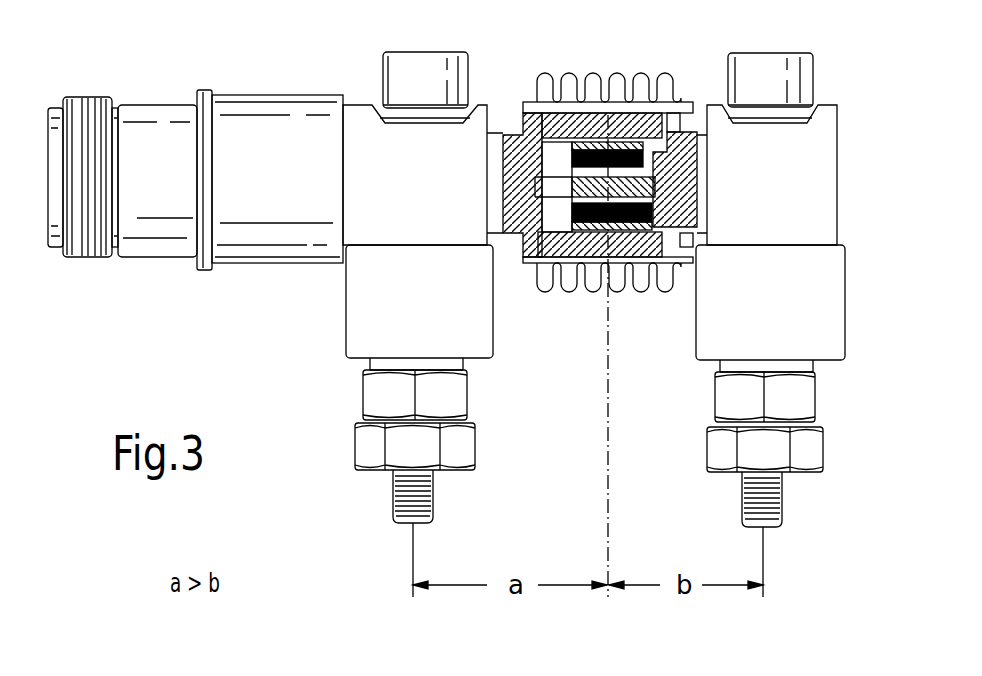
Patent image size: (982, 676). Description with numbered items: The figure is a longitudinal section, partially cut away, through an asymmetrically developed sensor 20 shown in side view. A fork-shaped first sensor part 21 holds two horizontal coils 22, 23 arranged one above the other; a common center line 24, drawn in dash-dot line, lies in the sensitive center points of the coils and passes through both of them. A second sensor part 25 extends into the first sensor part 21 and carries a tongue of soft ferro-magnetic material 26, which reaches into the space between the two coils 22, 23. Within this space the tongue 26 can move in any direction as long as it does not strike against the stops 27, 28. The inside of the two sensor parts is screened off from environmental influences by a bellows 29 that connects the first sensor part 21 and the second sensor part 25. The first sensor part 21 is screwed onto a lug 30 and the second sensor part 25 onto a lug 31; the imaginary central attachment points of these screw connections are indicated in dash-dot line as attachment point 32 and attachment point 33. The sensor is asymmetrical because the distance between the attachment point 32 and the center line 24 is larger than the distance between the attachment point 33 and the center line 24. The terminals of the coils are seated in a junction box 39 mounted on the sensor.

The sensor 20 is at (363, 88).
The first sensor part 21 is at (517, 140).
The coil 22 is at (595, 123).
The coil 23 is at (578, 240).
The center line 24 is at (607, 422).
The second sensor part 25 is at (673, 175).
The tongue of soft ferro-magnetic material 26 is at (657, 212).
The stop 27 is at (542, 100).
The stop 28 is at (537, 268).
The bellows 29 is at (627, 248).
The lug 30 is at (363, 320).
The lug 31 is at (832, 342).
The attachment point 32 is at (413, 557).
The attachment point 33 is at (763, 562).
The junction box 39 is at (165, 248).